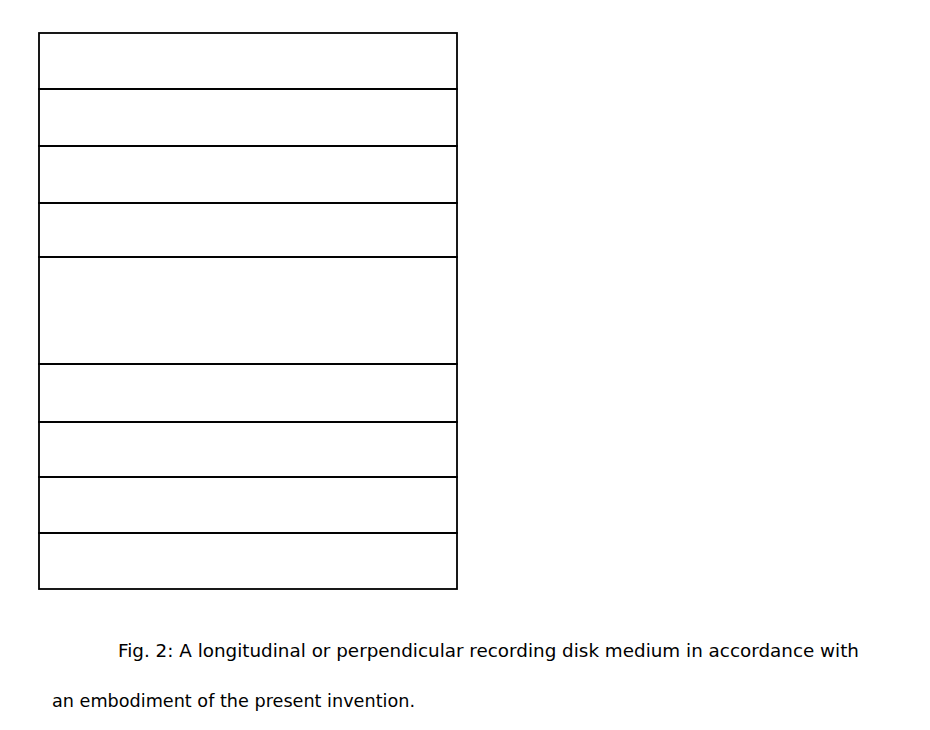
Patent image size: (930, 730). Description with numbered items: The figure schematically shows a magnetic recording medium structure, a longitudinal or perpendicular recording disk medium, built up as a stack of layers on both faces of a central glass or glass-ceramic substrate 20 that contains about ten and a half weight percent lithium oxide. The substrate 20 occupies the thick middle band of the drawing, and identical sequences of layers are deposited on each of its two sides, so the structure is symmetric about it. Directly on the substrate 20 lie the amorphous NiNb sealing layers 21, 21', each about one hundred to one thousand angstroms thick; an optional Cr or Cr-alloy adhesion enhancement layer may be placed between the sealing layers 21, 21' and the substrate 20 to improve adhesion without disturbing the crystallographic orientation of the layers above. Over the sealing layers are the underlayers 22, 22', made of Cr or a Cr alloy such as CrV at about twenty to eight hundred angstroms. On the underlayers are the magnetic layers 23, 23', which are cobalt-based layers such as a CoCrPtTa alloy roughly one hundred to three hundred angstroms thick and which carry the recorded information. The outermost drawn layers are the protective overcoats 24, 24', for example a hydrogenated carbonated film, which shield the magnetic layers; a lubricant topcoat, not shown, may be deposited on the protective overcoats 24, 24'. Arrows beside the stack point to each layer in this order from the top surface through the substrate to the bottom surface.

The substrate 20 is at (469, 326).
The amorphous NiNb sealing layer 21 is at (285, 228).
The underlayer 22 is at (285, 173).
The magnetic layer 23 is at (285, 117).
The protective overcoat 24 is at (285, 59).
The amorphous NiNb sealing layer 21' is at (288, 393).
The underlayer 22' is at (288, 449).
The magnetic layer 23' is at (288, 505).
The protective overcoat 24' is at (288, 561).